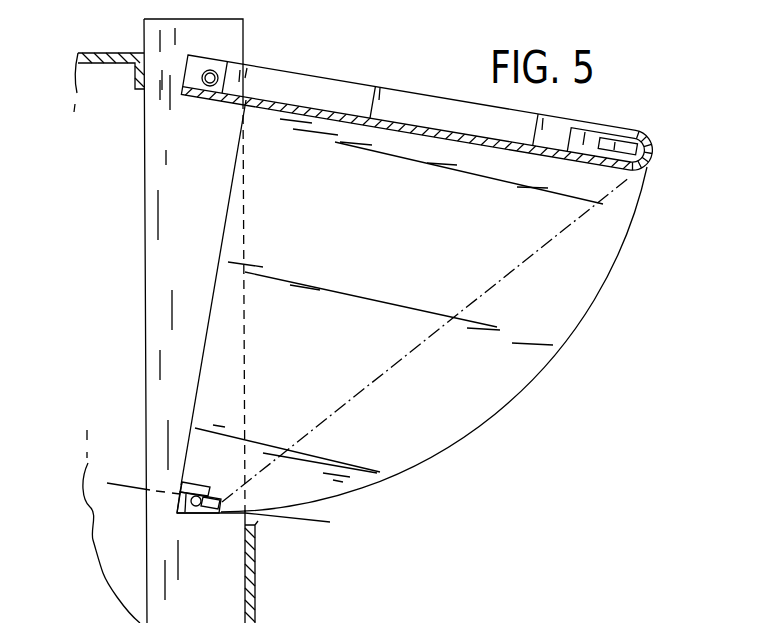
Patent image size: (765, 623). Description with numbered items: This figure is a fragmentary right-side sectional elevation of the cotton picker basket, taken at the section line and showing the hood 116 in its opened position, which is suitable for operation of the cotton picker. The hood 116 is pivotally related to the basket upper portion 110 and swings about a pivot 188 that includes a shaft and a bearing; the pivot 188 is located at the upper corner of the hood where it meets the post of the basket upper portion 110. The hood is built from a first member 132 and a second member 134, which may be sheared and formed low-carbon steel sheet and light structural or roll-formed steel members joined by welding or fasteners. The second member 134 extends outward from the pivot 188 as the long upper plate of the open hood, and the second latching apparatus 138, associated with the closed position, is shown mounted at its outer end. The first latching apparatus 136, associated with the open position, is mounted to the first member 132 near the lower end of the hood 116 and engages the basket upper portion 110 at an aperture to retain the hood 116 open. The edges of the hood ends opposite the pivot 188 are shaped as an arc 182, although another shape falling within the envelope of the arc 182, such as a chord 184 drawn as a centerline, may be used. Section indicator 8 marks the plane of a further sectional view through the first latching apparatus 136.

The section line 8- 8 is at (107, 490).
The basket upper portion 110 is at (255, 575).
The hood 116 is at (441, 306).
The first member 132 is at (198, 480).
The second member 134 is at (426, 85).
The first latching apparatus 136 is at (193, 515).
The second latching apparatus 138 is at (617, 148).
The arc 182 is at (482, 425).
The chord 184 is at (441, 345).
The pivot 188 is at (212, 70).